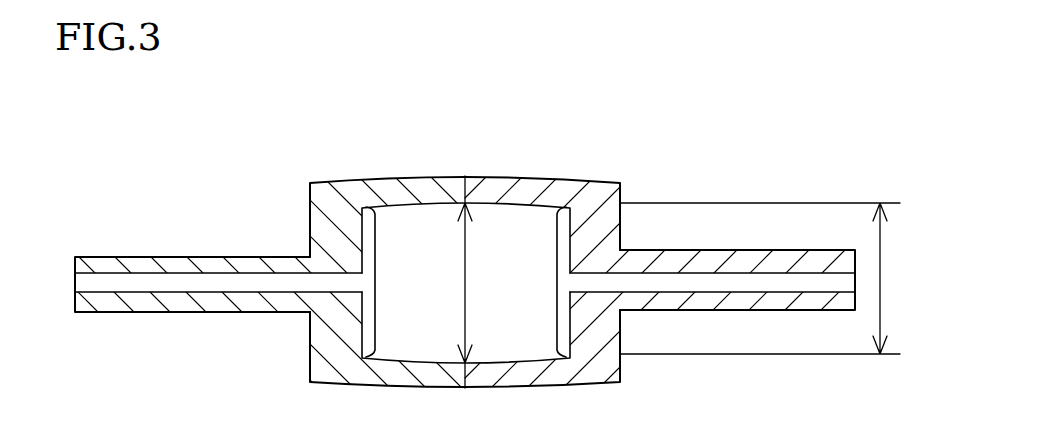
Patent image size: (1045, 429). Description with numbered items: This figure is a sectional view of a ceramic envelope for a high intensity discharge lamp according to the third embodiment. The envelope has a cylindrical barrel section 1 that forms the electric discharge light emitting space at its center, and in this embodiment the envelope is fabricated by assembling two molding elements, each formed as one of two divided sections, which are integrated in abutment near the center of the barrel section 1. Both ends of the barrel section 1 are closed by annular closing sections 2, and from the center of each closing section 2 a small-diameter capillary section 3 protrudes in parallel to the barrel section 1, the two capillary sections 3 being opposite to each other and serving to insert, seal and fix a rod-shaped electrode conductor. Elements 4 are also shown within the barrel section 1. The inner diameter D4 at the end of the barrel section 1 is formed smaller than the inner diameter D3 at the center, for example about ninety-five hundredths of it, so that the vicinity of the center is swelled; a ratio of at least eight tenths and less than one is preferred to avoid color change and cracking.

The barrel section 1 is at (457, 180).
The closing section 2 is at (308, 218).
The capillary section 3 is at (215, 255).
The electrode / inner strip 4 is at (376, 226).
The inner diameter of the center D3 is at (449, 282).
The inner diameter of the end D4 is at (771, 278).